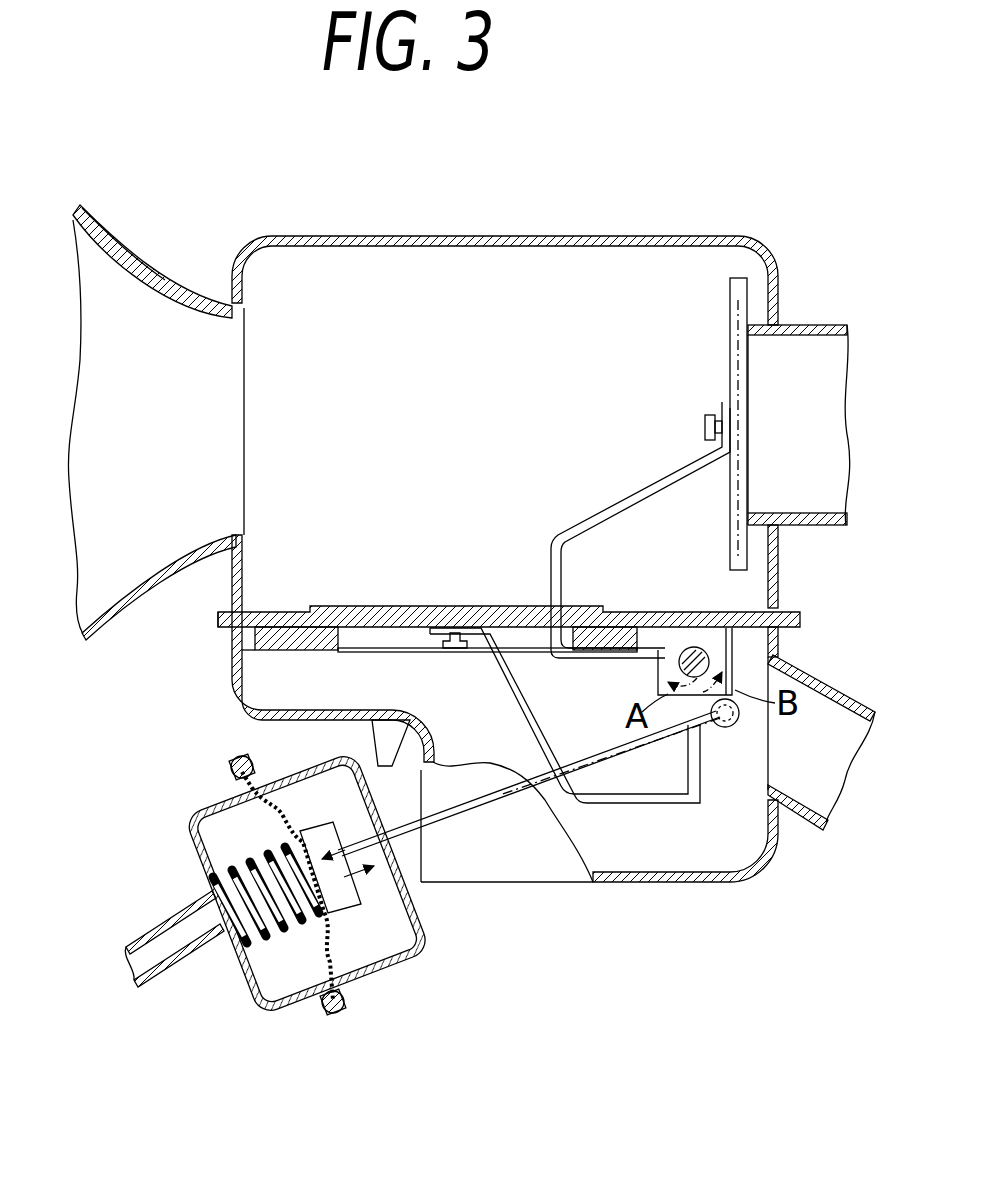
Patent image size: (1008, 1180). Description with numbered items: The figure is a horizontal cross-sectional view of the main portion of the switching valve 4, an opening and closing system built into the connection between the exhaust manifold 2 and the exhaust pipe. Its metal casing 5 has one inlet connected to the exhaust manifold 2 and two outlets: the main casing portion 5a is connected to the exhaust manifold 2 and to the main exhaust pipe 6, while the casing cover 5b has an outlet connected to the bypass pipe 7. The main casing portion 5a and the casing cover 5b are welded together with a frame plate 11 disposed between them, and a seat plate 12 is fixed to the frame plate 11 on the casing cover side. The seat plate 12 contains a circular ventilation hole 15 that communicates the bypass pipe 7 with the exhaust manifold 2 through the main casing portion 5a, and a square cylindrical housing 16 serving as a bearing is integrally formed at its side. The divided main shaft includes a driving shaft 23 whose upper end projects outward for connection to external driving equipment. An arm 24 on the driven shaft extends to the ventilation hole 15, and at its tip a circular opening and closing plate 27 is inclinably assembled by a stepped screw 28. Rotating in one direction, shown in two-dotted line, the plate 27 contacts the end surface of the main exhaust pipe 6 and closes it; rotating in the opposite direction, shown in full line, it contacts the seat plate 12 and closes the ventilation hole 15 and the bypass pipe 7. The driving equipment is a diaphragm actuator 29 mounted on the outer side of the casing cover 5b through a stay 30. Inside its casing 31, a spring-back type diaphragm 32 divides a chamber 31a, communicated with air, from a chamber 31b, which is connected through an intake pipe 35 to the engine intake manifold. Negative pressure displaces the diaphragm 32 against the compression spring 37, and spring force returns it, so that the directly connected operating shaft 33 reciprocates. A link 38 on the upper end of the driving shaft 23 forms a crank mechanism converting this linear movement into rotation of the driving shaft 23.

The exhaust manifold 2 is at (110, 226).
The switching valve 4 is at (680, 905).
The casing 5 is at (521, 534).
The main casing portion 5a is at (577, 237).
The casing cover 5b is at (612, 884).
The main exhaust pipe 6 is at (815, 325).
The bypass pipe 7 is at (855, 705).
The frame plate 11 is at (220, 626).
The seat plate 12 is at (265, 655).
The ventilation hole 15 is at (340, 640).
The housing 16 is at (735, 650).
The driving shaft 23 is at (693, 647).
The arm 24 is at (640, 485).
The opening and closing plate 27 is at (730, 317).
The stepped screw 28 is at (703, 425).
The diaphragm actuator 29 is at (311, 913).
The stay 30 is at (440, 893).
The casing 31 is at (305, 930).
The chamber 31a is at (400, 943).
The chamber 31b is at (212, 974).
The diaphragm 32 is at (313, 1012).
The operating shaft 33 is at (482, 828).
The intake pipe 35 is at (153, 968).
The compression spring 37 is at (208, 866).
The link 38 is at (752, 722).